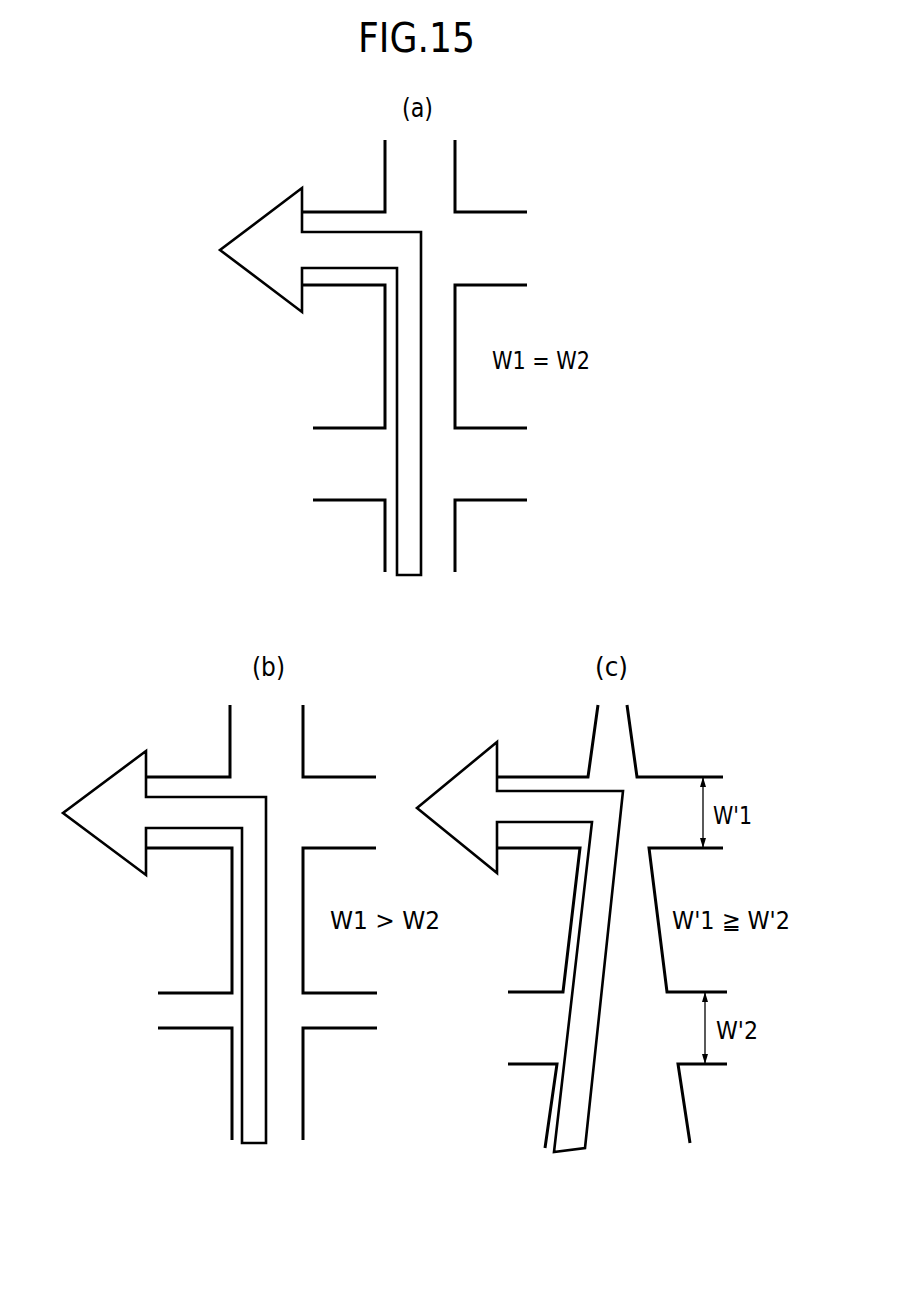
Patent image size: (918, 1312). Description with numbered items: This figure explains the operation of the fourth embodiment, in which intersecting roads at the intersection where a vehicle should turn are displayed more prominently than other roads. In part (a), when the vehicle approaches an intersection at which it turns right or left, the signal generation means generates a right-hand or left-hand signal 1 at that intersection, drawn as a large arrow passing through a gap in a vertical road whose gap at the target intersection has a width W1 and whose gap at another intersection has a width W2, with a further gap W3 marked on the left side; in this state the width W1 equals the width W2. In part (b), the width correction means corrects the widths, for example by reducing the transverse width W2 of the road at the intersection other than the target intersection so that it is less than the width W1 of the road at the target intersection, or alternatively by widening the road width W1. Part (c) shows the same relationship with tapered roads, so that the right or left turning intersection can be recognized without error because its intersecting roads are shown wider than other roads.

The right-hand or left-hand signal 1 is at (270, 217).
The width of a road at the target intersection W1 is at (507, 213).
The transverse width of a road at an intersection other than the target intersection W2 is at (507, 429).
The third gap width W3 is at (328, 285).